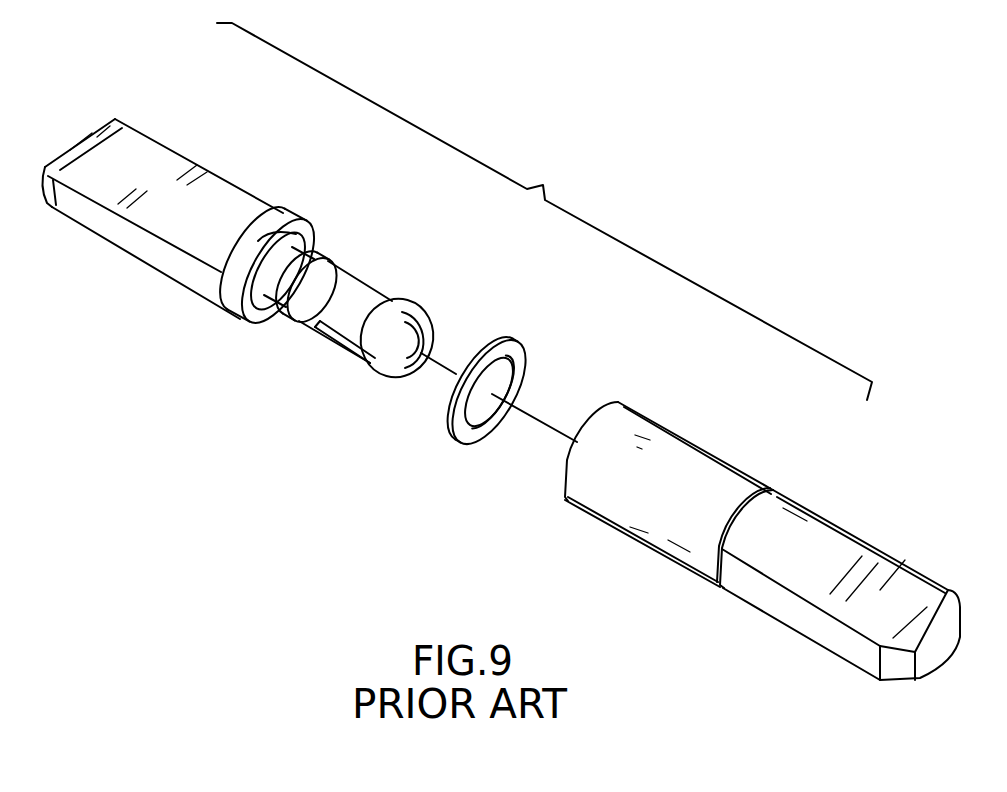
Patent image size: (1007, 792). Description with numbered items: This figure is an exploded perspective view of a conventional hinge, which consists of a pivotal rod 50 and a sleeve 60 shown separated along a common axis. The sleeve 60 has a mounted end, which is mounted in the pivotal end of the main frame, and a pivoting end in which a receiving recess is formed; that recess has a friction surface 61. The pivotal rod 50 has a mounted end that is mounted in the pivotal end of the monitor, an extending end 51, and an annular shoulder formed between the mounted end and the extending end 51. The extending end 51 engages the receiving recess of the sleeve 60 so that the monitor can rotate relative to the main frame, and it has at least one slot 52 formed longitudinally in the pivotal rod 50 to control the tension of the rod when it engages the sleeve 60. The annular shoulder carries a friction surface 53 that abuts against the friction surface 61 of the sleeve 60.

The pivotal rod 50 is at (191, 178).
The extending end 51 is at (357, 293).
The slot 52 is at (380, 364).
The friction surface 53 is at (252, 318).
The sleeve 60 is at (713, 473).
The friction surface 61 is at (608, 407).